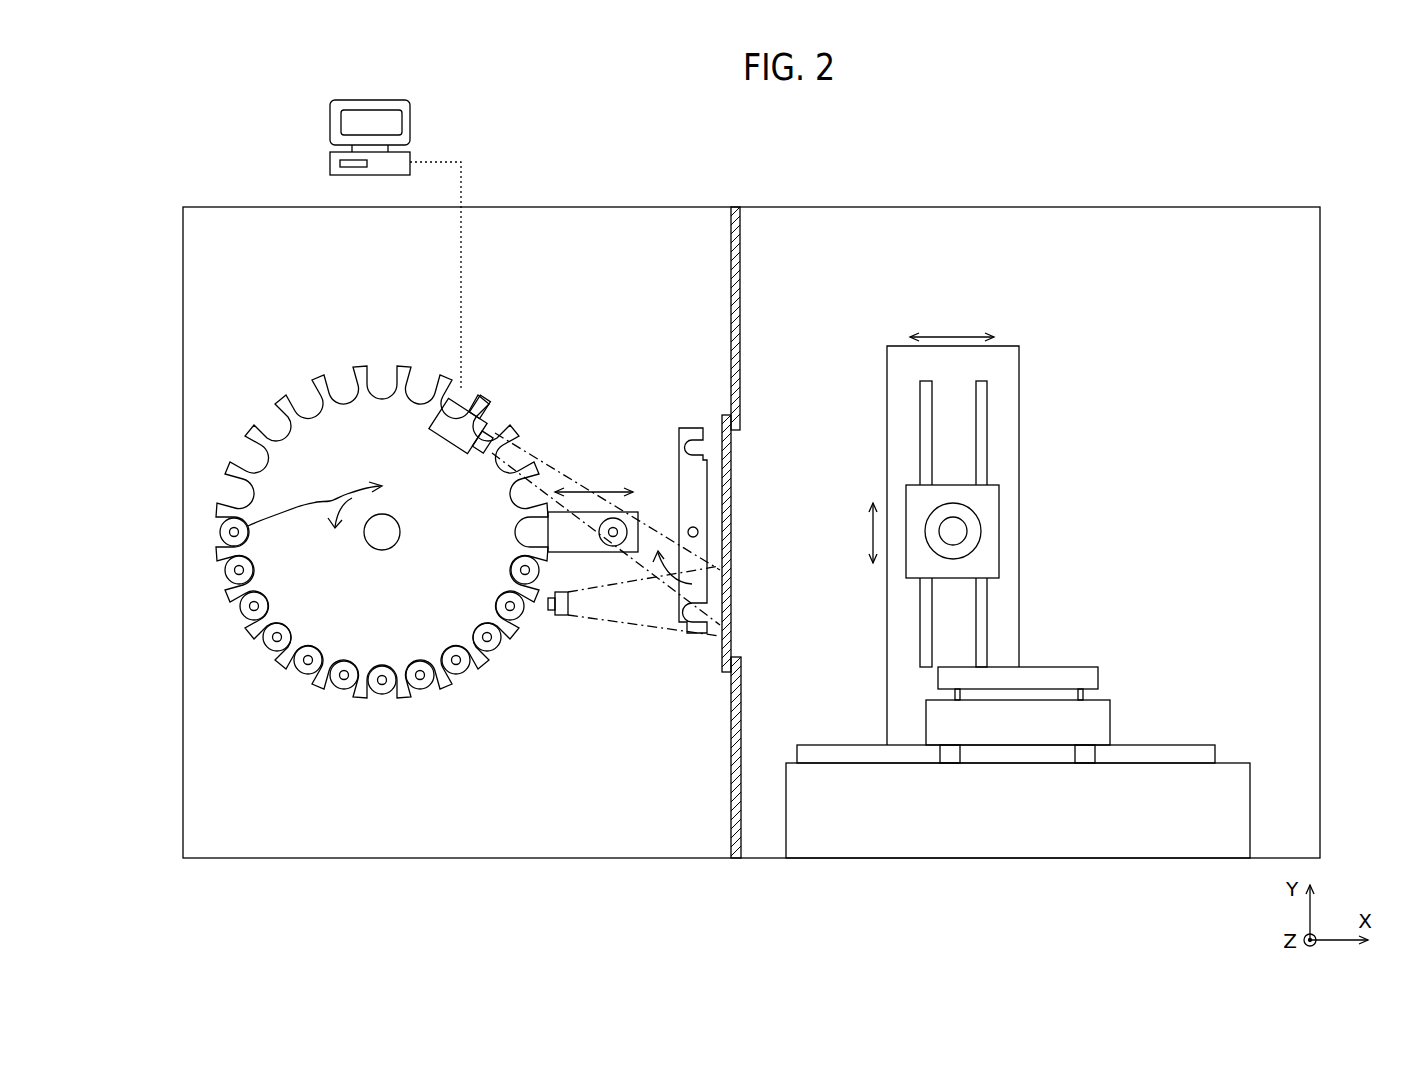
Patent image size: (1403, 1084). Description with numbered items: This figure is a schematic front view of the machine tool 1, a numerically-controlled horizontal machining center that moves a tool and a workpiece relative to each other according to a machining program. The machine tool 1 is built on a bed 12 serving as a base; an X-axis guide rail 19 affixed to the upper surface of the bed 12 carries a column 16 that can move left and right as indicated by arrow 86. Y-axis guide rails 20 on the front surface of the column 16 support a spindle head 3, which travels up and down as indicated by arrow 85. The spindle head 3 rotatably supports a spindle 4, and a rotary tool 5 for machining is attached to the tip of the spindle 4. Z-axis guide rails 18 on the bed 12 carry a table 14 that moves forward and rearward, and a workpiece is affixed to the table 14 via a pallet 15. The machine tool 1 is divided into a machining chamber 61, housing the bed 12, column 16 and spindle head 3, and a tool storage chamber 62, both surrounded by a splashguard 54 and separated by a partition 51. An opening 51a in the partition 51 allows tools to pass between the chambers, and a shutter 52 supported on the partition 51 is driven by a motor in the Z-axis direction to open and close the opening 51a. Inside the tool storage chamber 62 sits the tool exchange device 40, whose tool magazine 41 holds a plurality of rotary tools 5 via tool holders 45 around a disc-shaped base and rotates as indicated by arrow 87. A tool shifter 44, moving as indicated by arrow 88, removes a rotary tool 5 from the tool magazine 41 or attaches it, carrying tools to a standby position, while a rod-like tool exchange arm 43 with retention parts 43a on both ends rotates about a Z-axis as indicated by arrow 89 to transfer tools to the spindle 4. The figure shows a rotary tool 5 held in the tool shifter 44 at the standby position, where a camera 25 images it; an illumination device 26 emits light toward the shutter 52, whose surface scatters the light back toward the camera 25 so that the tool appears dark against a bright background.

The machine tool 1 is at (1142, 178).
The spindle head 3 is at (988, 507).
The spindle 4 is at (962, 531).
The rotary tool 5 is at (232, 570).
The bed 12 is at (1213, 840).
The table 14 is at (1100, 722).
The pallet 15 is at (1090, 678).
The column 16 is at (1005, 437).
The Z-axis guide rails 18 is at (948, 757).
The X-axis guide rail 19 is at (820, 757).
The Y-axis guide rails 20 is at (918, 408).
The camera 25 is at (430, 383).
The illumination device 26 is at (557, 617).
The tool exchange device 40 is at (340, 529).
The tool magazine 41 is at (275, 497).
The tool exchange arm 43 is at (683, 428).
The retention parts 43a is at (702, 447).
The tool shifter 44 is at (587, 520).
The tool holder 45 is at (245, 612).
The partition 51 is at (737, 228).
The opening 51a is at (739, 650).
The shutter 52 is at (733, 460).
The splashguard 54 is at (1322, 308).
The machining chamber 61 is at (1290, 232).
The tool storage chamber 62 is at (227, 223).
The arrow 85 is at (862, 520).
The arrow 86 is at (947, 337).
The arrow 87 is at (228, 531).
The arrow 88 is at (626, 514).
The arrow 89 is at (670, 570).